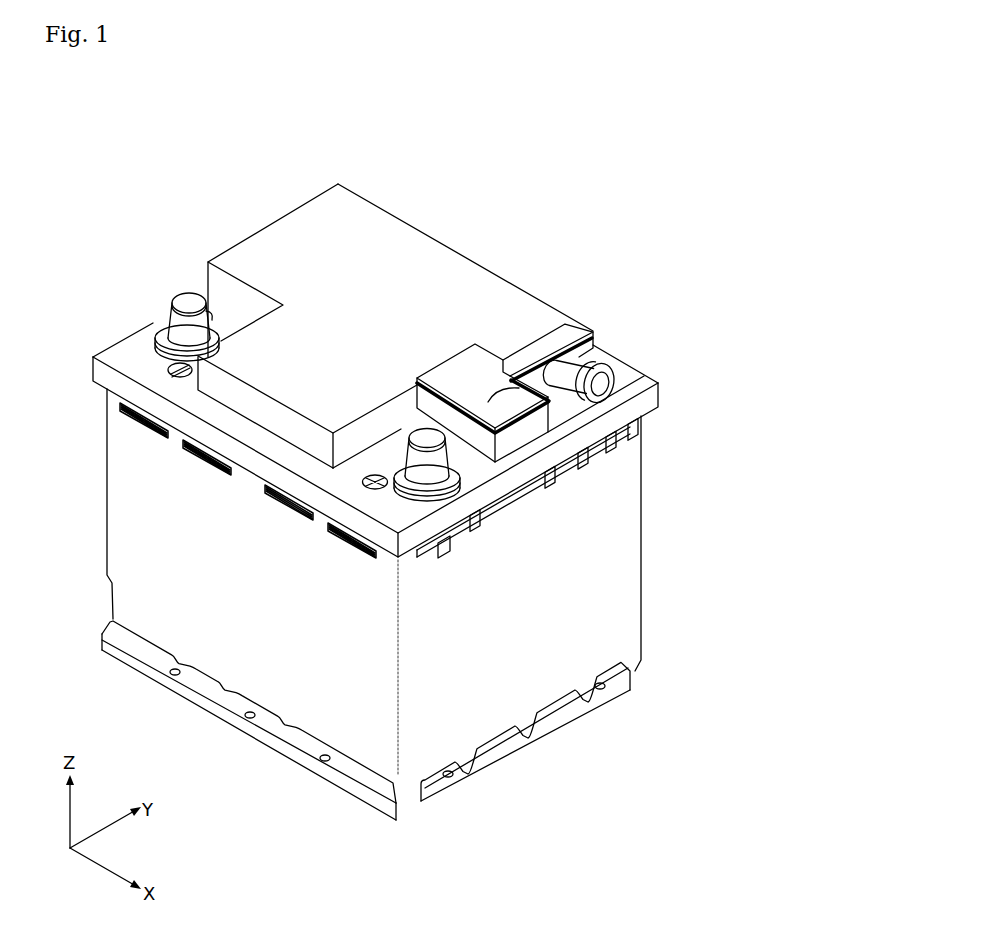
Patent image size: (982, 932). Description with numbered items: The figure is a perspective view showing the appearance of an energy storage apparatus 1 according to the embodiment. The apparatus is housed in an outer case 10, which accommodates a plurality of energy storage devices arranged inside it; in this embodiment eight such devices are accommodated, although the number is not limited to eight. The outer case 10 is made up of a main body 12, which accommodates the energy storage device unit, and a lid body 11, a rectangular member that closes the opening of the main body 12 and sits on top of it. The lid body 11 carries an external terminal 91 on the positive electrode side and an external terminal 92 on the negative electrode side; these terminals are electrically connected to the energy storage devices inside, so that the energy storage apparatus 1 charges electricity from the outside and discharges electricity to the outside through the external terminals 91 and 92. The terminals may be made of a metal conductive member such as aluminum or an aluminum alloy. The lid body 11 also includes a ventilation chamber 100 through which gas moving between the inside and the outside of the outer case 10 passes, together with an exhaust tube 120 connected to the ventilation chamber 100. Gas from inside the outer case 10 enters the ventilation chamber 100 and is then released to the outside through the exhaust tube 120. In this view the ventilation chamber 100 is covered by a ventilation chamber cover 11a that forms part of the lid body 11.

The energy storage apparatus 1 is at (618, 140).
The outer case 10 is at (737, 257).
The lid body 11 is at (597, 333).
The ventilation chamber cover 11a is at (484, 378).
The main body 12 is at (630, 458).
The external terminal 91 is at (425, 437).
The external terminal 92 is at (187, 300).
The ventilation chamber 100 is at (513, 373).
The exhaust tube 120 is at (563, 362).